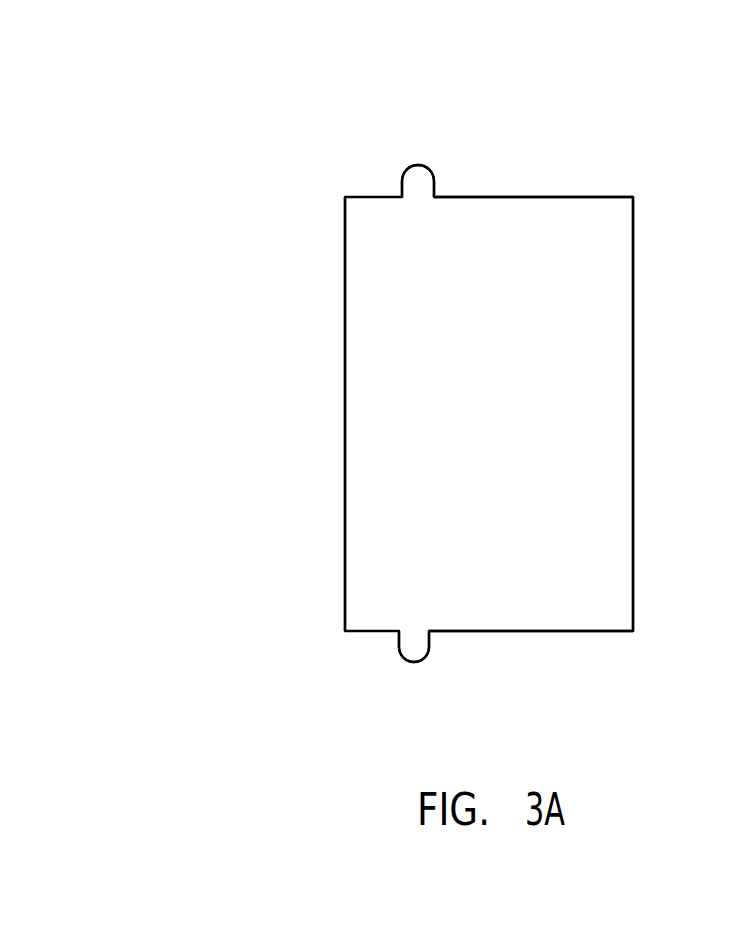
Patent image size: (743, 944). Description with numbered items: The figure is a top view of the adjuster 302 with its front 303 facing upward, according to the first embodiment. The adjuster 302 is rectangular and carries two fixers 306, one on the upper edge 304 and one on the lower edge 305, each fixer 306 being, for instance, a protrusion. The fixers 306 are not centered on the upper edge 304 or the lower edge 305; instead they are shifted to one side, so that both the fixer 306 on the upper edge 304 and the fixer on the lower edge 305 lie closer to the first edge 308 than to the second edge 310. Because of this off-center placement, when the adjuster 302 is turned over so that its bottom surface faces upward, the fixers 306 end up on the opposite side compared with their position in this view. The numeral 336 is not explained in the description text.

The adjuster 302 is at (688, 76).
The front 303 is at (586, 492).
The upper edge 304 is at (543, 197).
The lower edge 305 is at (554, 632).
The fixer 306 is at (424, 167).
The bottom protrusion 336 is at (401, 660).
The first edge 308 is at (345, 362).
The second edge 310 is at (635, 305).